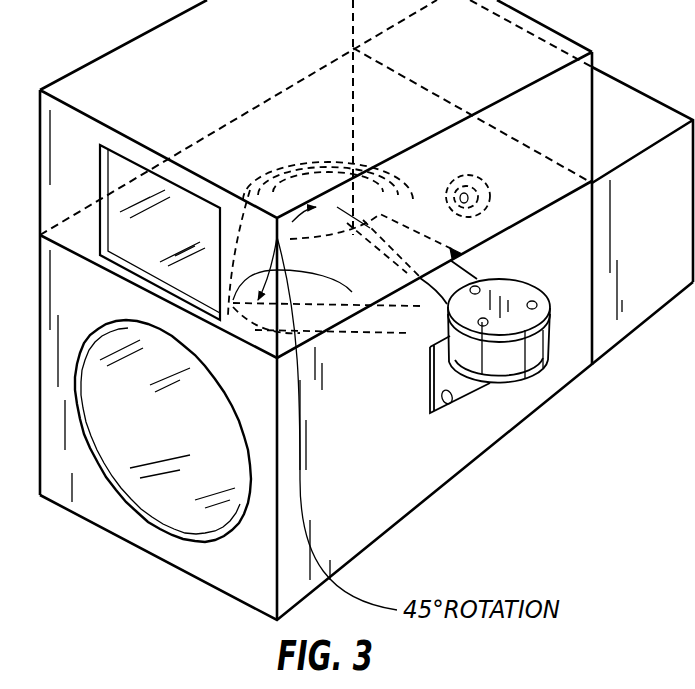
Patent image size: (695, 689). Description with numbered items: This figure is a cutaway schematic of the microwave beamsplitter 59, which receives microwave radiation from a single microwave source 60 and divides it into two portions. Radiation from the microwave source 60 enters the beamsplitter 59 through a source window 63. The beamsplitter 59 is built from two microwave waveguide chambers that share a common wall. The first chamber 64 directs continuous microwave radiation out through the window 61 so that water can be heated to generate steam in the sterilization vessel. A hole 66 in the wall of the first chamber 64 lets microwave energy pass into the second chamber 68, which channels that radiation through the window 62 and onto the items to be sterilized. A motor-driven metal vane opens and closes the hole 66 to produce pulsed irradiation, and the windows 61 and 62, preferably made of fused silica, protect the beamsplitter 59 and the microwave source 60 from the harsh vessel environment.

The microwave beamsplitter 59 is at (545, 413).
The microwave source 60 is at (654, 257).
The window 61 is at (173, 452).
The window 62 is at (176, 243).
The source window 63 is at (514, 158).
The first chamber 64 is at (360, 448).
The hole 66 is at (348, 203).
The second chamber 68 is at (313, 127).